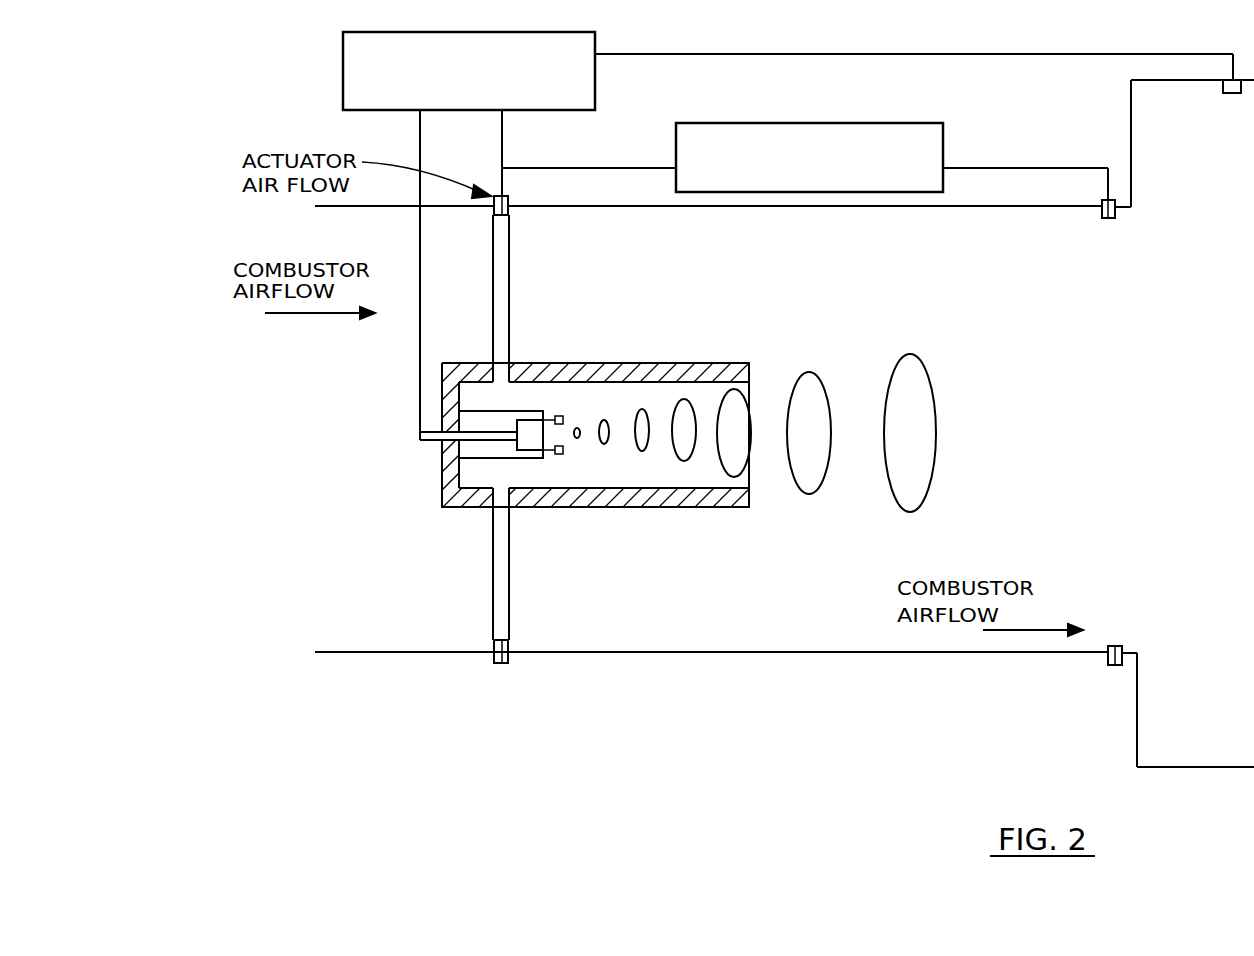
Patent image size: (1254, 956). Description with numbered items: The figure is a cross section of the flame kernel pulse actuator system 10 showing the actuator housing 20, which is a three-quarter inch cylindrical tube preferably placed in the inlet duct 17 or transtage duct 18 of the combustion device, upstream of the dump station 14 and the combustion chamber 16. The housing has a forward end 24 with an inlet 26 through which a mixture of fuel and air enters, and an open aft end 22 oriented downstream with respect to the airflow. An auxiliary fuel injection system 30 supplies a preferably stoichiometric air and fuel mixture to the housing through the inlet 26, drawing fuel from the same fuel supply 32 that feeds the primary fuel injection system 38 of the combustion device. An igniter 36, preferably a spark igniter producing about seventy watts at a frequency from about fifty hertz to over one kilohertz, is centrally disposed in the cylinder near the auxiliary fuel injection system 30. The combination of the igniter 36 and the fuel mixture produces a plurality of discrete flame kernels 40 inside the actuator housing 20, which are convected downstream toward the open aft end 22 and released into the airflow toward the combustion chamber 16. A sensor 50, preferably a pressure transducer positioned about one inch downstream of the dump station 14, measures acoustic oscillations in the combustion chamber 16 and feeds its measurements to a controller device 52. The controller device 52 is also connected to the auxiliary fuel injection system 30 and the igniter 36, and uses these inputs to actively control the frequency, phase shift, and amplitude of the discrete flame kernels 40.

The flame kernel pulse actuator system 10 is at (256, 121).
The dump station 14 is at (1137, 653).
The combustion chamber 16 is at (1177, 414).
The inlet duct 17 is at (298, 536).
The transtage duct 18 is at (671, 604).
The actuator housing 20 is at (563, 362).
The open aft end 22 is at (749, 482).
The forward end 24 is at (442, 473).
The inlet 26 is at (500, 320).
The auxiliary fuel injection system 30 is at (508, 210).
The fuel supply 32 is at (873, 123).
The igniter 36 is at (540, 458).
The primary fuel injection system 38 is at (1108, 218).
The discrete flame kernels 40 is at (638, 409).
The sensor 50 is at (1237, 93).
The controller device 52 is at (343, 78).